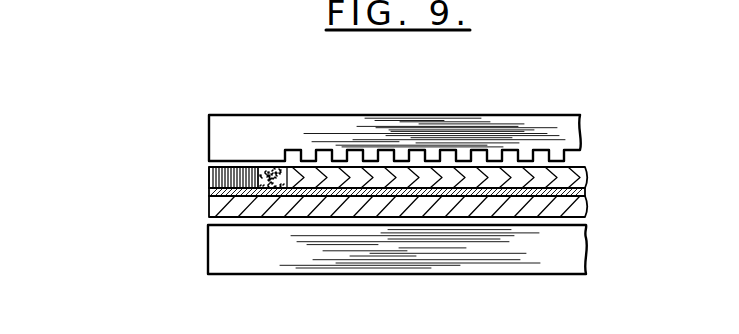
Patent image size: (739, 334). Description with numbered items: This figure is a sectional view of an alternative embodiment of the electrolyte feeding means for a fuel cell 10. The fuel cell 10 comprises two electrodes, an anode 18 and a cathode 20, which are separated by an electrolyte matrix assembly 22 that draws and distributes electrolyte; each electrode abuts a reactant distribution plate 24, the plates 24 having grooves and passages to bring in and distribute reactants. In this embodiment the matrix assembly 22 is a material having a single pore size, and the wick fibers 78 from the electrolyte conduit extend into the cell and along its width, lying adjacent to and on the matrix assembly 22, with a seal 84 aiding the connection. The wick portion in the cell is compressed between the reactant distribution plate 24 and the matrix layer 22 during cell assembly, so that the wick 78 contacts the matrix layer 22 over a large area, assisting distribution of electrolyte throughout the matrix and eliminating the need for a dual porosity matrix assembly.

The fuel cell 10 is at (545, 111).
The reactant distribution plate 24 is at (407, 128).
The anode 18 is at (568, 177).
The seal 84 is at (228, 176).
The fibers 78 is at (273, 166).
The electrolyte matrix assembly 22 is at (232, 190).
The cathode 20 is at (567, 208).